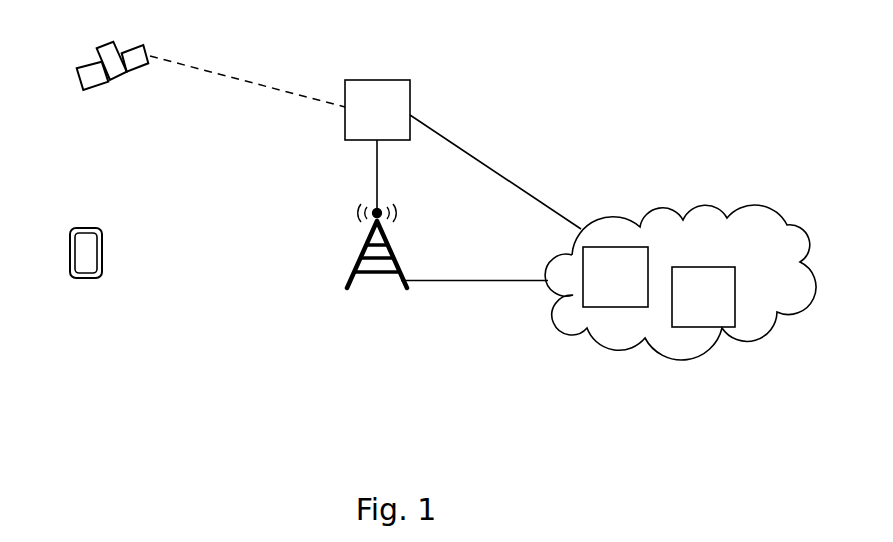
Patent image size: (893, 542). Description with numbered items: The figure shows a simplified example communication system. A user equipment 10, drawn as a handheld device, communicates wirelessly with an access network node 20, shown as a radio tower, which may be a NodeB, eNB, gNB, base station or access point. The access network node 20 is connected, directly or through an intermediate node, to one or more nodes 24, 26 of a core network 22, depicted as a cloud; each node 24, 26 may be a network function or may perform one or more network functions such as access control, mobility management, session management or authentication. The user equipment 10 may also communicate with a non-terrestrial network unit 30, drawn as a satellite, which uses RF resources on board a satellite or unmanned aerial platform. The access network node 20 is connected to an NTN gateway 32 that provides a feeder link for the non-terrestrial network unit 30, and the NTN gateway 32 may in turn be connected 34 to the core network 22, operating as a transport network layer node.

The user equipment 10 is at (70, 257).
The access network node 20 is at (397, 268).
The core network 22 is at (731, 257).
The core network node 24 is at (600, 286).
The core network node 26 is at (688, 306).
The non-terrestrial network unit 30 is at (112, 53).
The NTN gateway 32 is at (362, 118).
The connection 34 is at (457, 143).